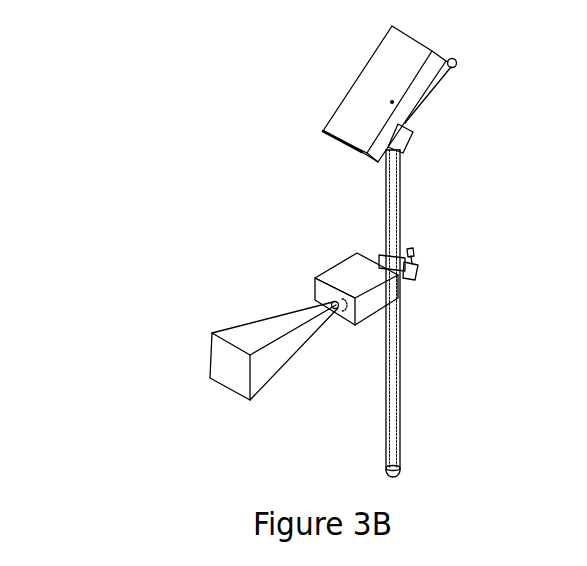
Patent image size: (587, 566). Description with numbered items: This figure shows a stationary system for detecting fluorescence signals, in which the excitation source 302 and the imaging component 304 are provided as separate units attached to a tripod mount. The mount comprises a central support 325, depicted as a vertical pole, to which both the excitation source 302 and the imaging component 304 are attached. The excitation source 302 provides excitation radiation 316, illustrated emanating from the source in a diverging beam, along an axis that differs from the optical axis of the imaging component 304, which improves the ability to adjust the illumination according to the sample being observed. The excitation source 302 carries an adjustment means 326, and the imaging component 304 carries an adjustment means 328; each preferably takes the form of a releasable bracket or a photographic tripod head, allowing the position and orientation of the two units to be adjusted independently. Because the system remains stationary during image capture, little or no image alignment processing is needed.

The excitation source 302 is at (372, 308).
The imaging component 304 is at (405, 122).
The excitation radiation 316 is at (238, 332).
The central support 325 is at (393, 420).
The adjustment means 326 is at (385, 251).
The adjustment means 328 is at (447, 65).